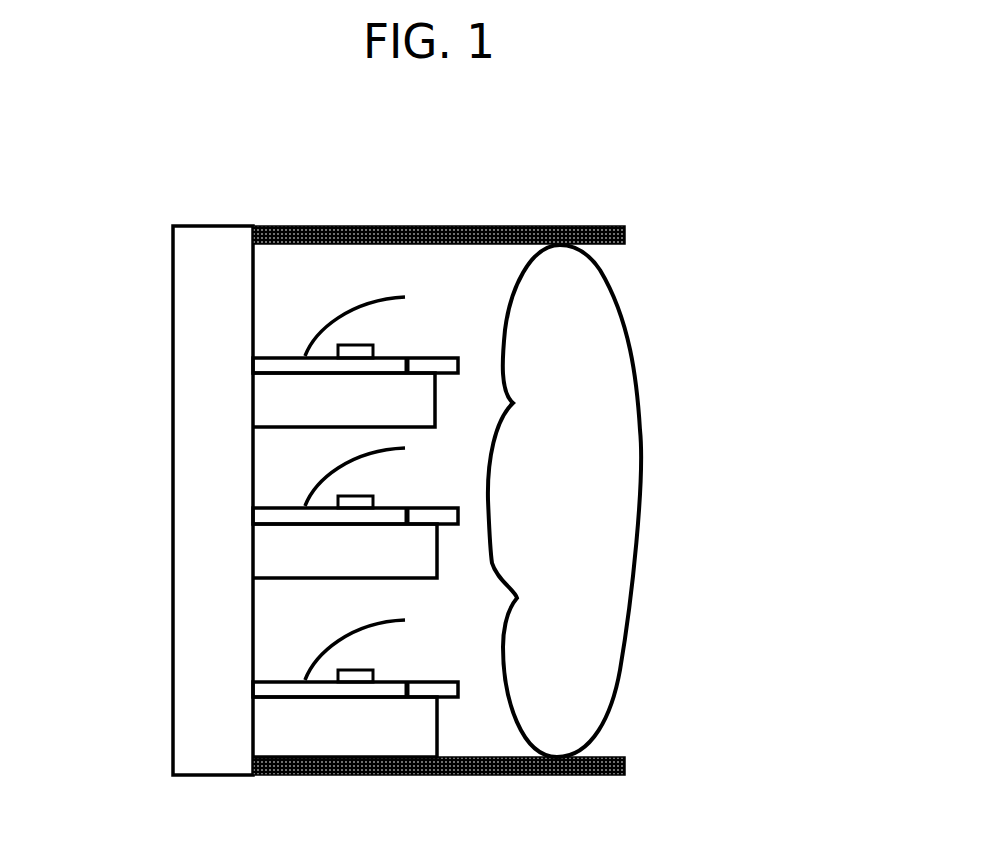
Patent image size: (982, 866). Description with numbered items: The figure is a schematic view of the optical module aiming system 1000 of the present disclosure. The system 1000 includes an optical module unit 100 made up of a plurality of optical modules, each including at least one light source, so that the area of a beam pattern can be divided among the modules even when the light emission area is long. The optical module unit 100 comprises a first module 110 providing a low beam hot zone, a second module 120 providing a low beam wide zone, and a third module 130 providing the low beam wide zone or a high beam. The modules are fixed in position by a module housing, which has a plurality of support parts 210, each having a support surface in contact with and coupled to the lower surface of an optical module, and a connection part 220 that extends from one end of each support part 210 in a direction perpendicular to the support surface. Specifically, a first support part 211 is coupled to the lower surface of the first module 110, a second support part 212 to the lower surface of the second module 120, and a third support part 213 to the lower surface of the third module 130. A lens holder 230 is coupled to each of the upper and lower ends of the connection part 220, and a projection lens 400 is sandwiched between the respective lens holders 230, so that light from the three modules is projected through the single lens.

The optical module aiming system 1000 is at (676, 207).
The optical module unit 100 is at (445, 276).
The first module 110 is at (278, 365).
The second module 120 is at (267, 517).
The third module 130 is at (272, 690).
The support part 210 is at (488, 737).
The first support part 211 is at (270, 401).
The second support part 212 is at (260, 557).
The third support part 213 is at (260, 727).
The connection part 220 is at (172, 745).
The lens holder 230 is at (297, 777).
The projection lens 400 is at (630, 338).